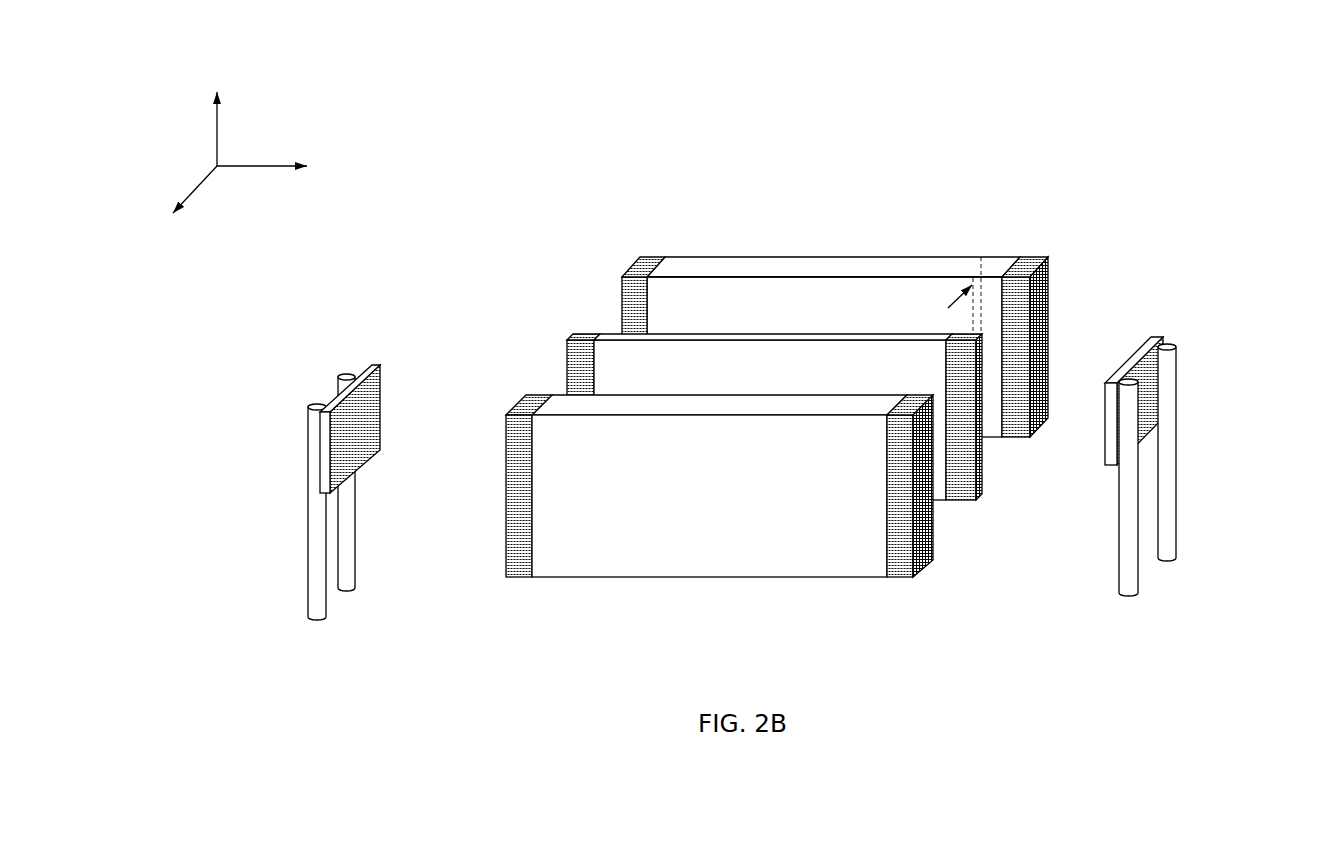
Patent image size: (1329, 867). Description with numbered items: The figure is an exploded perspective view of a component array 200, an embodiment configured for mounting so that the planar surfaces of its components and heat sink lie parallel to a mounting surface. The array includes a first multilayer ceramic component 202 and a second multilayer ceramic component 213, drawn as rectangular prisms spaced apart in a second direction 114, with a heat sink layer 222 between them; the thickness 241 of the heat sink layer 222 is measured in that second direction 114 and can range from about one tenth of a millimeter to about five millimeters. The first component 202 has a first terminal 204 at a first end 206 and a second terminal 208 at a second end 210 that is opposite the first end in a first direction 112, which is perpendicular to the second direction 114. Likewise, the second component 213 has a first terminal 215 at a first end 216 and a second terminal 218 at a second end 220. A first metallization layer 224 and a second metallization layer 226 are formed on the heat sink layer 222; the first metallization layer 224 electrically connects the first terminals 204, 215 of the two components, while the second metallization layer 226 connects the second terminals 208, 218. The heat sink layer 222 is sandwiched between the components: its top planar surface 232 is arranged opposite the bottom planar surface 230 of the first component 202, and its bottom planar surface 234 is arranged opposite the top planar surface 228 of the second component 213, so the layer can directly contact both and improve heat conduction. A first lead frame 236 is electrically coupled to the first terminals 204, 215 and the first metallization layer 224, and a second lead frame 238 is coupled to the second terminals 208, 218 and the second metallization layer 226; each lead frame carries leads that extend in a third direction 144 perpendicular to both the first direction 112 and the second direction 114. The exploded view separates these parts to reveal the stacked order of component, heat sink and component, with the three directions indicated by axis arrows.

The first direction 112 is at (289, 169).
The second direction 114 is at (177, 209).
The third direction 144 is at (214, 113).
The component array 200 is at (408, 312).
The first multilayer ceramic component 202 is at (867, 307).
The first terminal 204 is at (660, 257).
The first end 206 is at (630, 262).
The second terminal 208 is at (1052, 275).
The second end 210 is at (1048, 258).
The second multilayer ceramic component 213 is at (634, 578).
The first terminal 215 is at (506, 437).
The first end 216 is at (506, 419).
The second terminal 218 is at (905, 580).
The second end 220 is at (1145, 457).
The heat sink layer 222 is at (913, 277).
The first metallization layer 224 is at (570, 337).
The second metallization layer 226 is at (1050, 290).
The top planar surface 228 is at (677, 390).
The bottom planar surface 230 is at (818, 318).
The top planar surface 232 is at (737, 330).
The bottom planar surface 234 is at (780, 383).
The first lead frame 236 is at (308, 472).
The second lead frame 238 is at (1202, 466).
The thickness 241 is at (1010, 248).